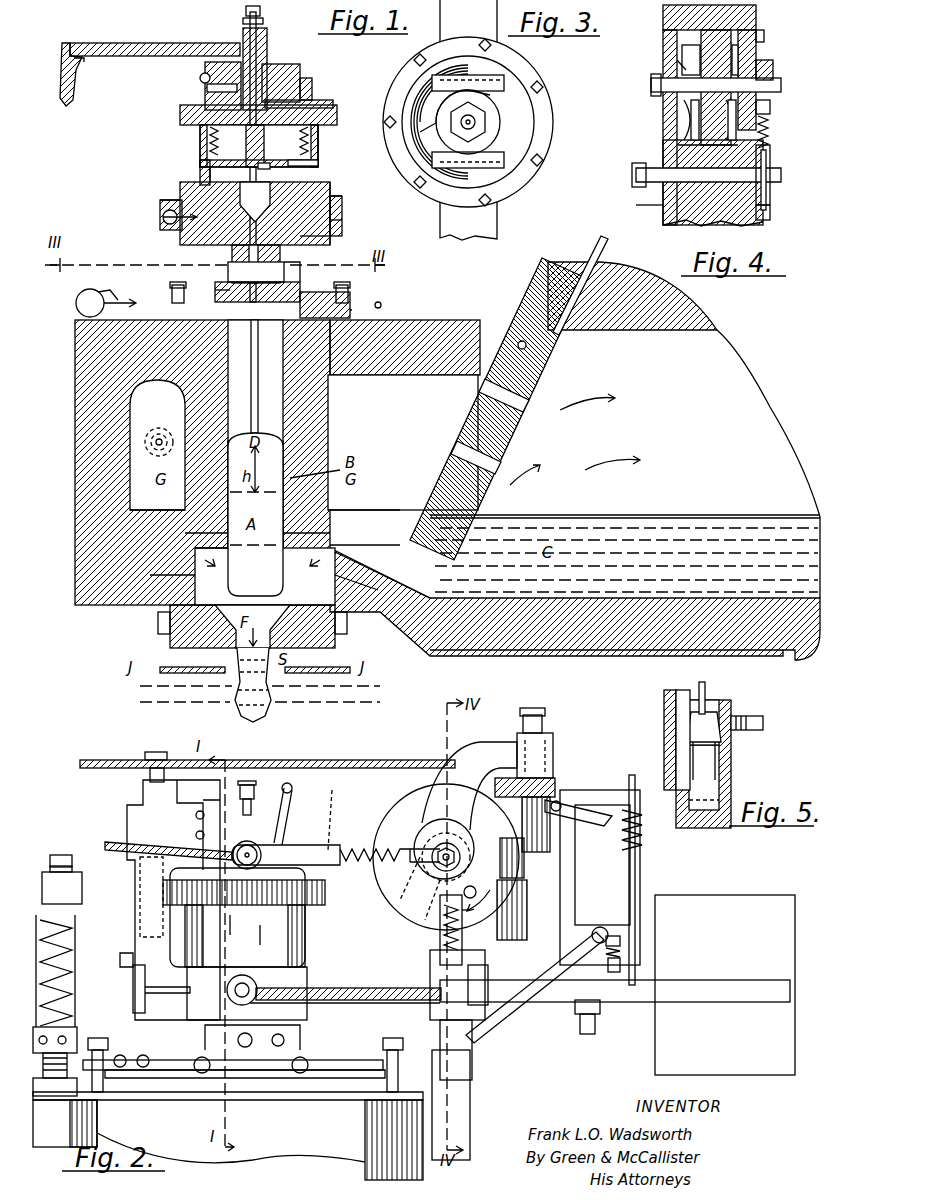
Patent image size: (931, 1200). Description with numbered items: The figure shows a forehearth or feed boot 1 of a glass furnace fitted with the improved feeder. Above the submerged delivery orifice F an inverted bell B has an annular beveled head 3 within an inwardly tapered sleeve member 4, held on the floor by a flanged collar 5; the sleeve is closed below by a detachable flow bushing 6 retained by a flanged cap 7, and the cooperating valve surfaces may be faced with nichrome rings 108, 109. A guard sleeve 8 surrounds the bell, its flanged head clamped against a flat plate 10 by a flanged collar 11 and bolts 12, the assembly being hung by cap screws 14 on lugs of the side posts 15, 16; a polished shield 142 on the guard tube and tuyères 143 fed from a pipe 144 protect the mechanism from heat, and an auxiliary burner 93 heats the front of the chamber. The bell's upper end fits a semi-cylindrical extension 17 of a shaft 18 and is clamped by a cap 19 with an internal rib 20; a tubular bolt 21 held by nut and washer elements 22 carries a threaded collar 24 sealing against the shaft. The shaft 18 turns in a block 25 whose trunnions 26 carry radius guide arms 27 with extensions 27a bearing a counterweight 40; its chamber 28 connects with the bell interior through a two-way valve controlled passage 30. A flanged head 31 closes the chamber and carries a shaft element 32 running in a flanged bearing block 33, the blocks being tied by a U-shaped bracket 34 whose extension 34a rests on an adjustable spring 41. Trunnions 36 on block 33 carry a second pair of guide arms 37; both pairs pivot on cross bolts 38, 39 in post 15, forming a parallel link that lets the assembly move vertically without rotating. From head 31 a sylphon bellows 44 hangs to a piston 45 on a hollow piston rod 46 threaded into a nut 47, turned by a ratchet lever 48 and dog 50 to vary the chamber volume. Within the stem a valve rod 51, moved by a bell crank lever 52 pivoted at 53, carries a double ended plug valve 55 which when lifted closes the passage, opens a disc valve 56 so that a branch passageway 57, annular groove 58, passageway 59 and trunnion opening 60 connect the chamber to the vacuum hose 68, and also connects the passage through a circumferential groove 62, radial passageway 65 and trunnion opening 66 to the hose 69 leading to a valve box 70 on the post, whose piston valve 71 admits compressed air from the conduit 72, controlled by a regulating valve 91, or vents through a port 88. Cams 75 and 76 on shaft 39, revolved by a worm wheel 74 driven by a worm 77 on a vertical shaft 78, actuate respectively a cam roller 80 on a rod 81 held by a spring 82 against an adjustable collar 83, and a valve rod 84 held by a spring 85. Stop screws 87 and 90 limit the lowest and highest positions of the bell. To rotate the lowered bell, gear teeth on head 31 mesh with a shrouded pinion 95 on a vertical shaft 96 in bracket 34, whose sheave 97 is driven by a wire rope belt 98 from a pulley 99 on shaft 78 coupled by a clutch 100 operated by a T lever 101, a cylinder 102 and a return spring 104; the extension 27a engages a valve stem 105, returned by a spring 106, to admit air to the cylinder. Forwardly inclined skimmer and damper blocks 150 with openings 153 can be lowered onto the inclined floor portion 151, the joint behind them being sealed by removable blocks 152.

In FIG. 1, the forehearth 1 is at (600, 645).
In FIG. 1, the annular beveled head 3 is at (150, 575).
In FIG. 1, the inwardly tapered sleeve member 4 is at (130, 538).
In FIG. 1, the flanged collar 5 is at (345, 622).
In FIG. 1, the detachable flow bushing 6 is at (265, 578).
In FIG. 1, the flanged cap 7 is at (170, 632).
In FIG. 1, the guard sleeve 8 is at (318, 438).
In FIG. 1, the flat plate 10 is at (345, 300).
In FIG. 3, the flat plate 10 is at (511, 192).
In FIG. 2, the flat plate 10 is at (325, 1062).
In FIG. 1, the flanged collar 11 is at (350, 313).
In FIG. 1, the bolts 12 is at (172, 292).
In FIG. 3, the bolts 12 is at (541, 86).
In FIG. 2, the cap screws 14 is at (108, 1043).
In FIG. 4, the side post 15 is at (667, 200).
In FIG. 2, the side post 15 is at (486, 752).
In FIG. 2, the side post 16 is at (60, 1140).
In FIG. 1, the semi-cylindrical extension 17 is at (300, 284).
In FIG. 1, the shaft 18 is at (322, 185).
In FIG. 3, the shaft 18 is at (505, 160).
In FIG. 2, the shaft 18 is at (295, 930).
In FIG. 1, the cap 19 is at (216, 283).
In FIG. 3, the cap 19 is at (440, 108).
In FIG. 2, the cap 19 is at (198, 1060).
In FIG. 1, the internal rib 20 is at (215, 290).
In FIG. 3, the internal rib 20 is at (410, 174).
In FIG. 1, the tubular bolt 21 is at (258, 398).
In FIG. 2, the tubular bolt 21 is at (254, 1040).
In FIG. 1, the nut and washer elements 22 is at (285, 266).
In FIG. 3, the nut and washer elements 22 is at (478, 120).
In FIG. 2, the nut and washer elements 22 is at (285, 1044).
In FIG. 1, the flanged and threaded collar 24 is at (232, 252).
In FIG. 2, the flanged and threaded collar 24 is at (206, 1034).
In FIG. 1, the block 25 is at (325, 240).
In FIG. 2, the block 25 is at (188, 990).
In FIG. 1, the trunnions 26 is at (160, 208).
In FIG. 2, the trunnions 26 is at (256, 985).
In FIG. 1, the radius guide arms 27 is at (165, 200).
In FIG. 2, the radius guide arms 27 is at (345, 987).
In FIG. 2, the extensions 27a is at (750, 1003).
In FIG. 1, the chamber 28 is at (200, 158).
In FIG. 1, the valve controlled passage 30 is at (215, 175).
In FIG. 1, the flanged head 31 is at (180, 114).
In FIG. 2, the flanged head 31 is at (326, 892).
In FIG. 1, the shaft element 32 is at (290, 66).
In FIG. 1, the flanged bearing block 33 is at (305, 103).
In FIG. 2, the flanged bearing block 33 is at (265, 847).
In FIG. 2, the U-shaped bracket 34 is at (150, 820).
In FIG. 2, the extension 34a is at (118, 958).
In FIG. 1, the trunnions 36 is at (312, 82).
In FIG. 2, the trunnions 36 is at (247, 870).
In FIG. 1, the radius guide arms 37 is at (222, 62).
In FIG. 4, the radius guide arms 37 is at (681, 68).
In FIG. 2, the radius guide arms 37 is at (360, 848).
In FIG. 4, the cross bolt 38 is at (705, 215).
In FIG. 2, the cross bolt 38 is at (432, 974).
In FIG. 4, the cross bolt 39 is at (655, 85).
In FIG. 2, the cross bolt 39 is at (438, 852).
In FIG. 2, the adjustable counterweight 40 is at (735, 950).
In FIG. 2, the adjustable spring 41 is at (76, 996).
In FIG. 1, the sylphon bellows 44 is at (200, 138).
In FIG. 1, the piston 45 is at (249, 163).
In FIG. 1, the hollow piston rod 46 is at (290, 141).
In FIG. 1, the rotatable nut 47 is at (268, 58).
In FIG. 2, the rotatable nut 47 is at (285, 830).
In FIG. 1, the ratchet lever 48 is at (82, 33).
In FIG. 1, the spring retracted dog 50 is at (104, 57).
In FIG. 1, the valve rod 51 is at (249, 14).
In FIG. 2, the valve rod 51 is at (243, 800).
In FIG. 1, the bell crank lever 52 is at (261, 10).
In FIG. 2, the bell crank lever 52 is at (250, 780).
In FIG. 1, the pivot 53 is at (264, 22).
In FIG. 2, the pivot 53 is at (289, 782).
In FIG. 1, the double ended plug valve 55 is at (200, 190).
In FIG. 1, the disc valve 56 is at (318, 163).
In FIG. 1, the branch passageway 57 is at (318, 148).
In FIG. 1, the annular groove 58 is at (227, 141).
In FIG. 1, the passageway 59 is at (207, 88).
In FIG. 1, the transverse opening 60 is at (200, 76).
In FIG. 1, the circumferential groove 62 is at (334, 225).
In FIG. 1, the radial passageway 65 is at (165, 222).
In FIG. 1, the transverse opening 66 is at (163, 217).
In FIG. 2, the armored hose pipe 68 is at (140, 845).
In FIG. 2, the armored hose 69 is at (362, 1005).
In FIG. 5, the armored hose 69 is at (680, 700).
In FIG. 4, the valve box 70 is at (775, 183).
In FIG. 2, the valve box 70 is at (430, 1034).
In FIG. 5, the valve box 70 is at (668, 722).
In FIG. 4, the piston valve 71 is at (775, 212).
In FIG. 5, the piston valve 71 is at (722, 724).
In FIG. 2, the compressed air conduit 72 is at (632, 778).
In FIG. 5, the compressed air conduit 72 is at (768, 724).
In FIG. 4, the worm wheel 74 is at (742, 68).
In FIG. 2, the worm wheel 74 is at (422, 805).
In FIG. 4, the cam 75 is at (686, 60).
In FIG. 2, the cam 75 is at (460, 846).
In FIG. 4, the cam 76 is at (777, 72).
In FIG. 2, the cam 76 is at (446, 830).
In FIG. 2, the worm 77 is at (504, 866).
In FIG. 2, the vertical shaft 78 is at (535, 715).
In FIG. 2, the cam roller 80 is at (420, 870).
In FIG. 2, the reciprocable rod 81 is at (428, 888).
In FIG. 2, the spring 82 is at (342, 813).
In FIG. 4, the adjustable collar 83 is at (774, 108).
In FIG. 2, the adjustable collar 83 is at (400, 870).
In FIG. 4, the valve rod 84 is at (772, 166).
In FIG. 2, the valve rod 84 is at (440, 932).
In FIG. 5, the valve rod 84 is at (708, 696).
In FIG. 4, the spring 85 is at (774, 134).
In FIG. 2, the spring 85 is at (462, 912).
In FIG. 2, the stop screw 87 is at (598, 1020).
In FIG. 5, the atmospheric vent port 88 is at (735, 785).
In FIG. 2, the stop screw 90 is at (68, 860).
In FIG. 2, the regulating valve 91 is at (476, 1060).
In FIG. 1, the auxiliary burner 93 is at (159, 428).
In FIG. 2, the shrouded pinion 95 is at (140, 884).
In FIG. 2, the vertical shaft 96 is at (162, 766).
In FIG. 2, the grooved sheave 97 is at (152, 755).
In FIG. 2, the wire rope belt 98 is at (325, 762).
In FIG. 2, the pulley 99 is at (553, 770).
In FIG. 4, the clutch member 100 is at (768, 40).
In FIG. 2, the clutch member 100 is at (556, 785).
In FIG. 2, the T lever 101 is at (604, 816).
In FIG. 4, the cylinder 102 is at (690, 118).
In FIG. 2, the cylinder 102 is at (600, 877).
In FIG. 2, the return spring 104 is at (640, 838).
In FIG. 2, the valve stem 105 is at (622, 972).
In FIG. 2, the spring 106 is at (622, 948).
In FIG. 1, the ring 108 is at (330, 538).
In FIG. 1, the ring 109 is at (188, 533).
In FIG. 1, the metal shield 142 is at (382, 304).
In FIG. 1, the tuyères 143 is at (102, 290).
In FIG. 1, the pipe 144 is at (80, 296).
In FIG. 1, the skimmer and damper blocks 150 is at (540, 310).
In FIG. 1, the inclined portion 151 is at (432, 588).
In FIG. 1, the removable blocks 152 is at (582, 268).
In FIG. 1, the openings 153 is at (490, 426).